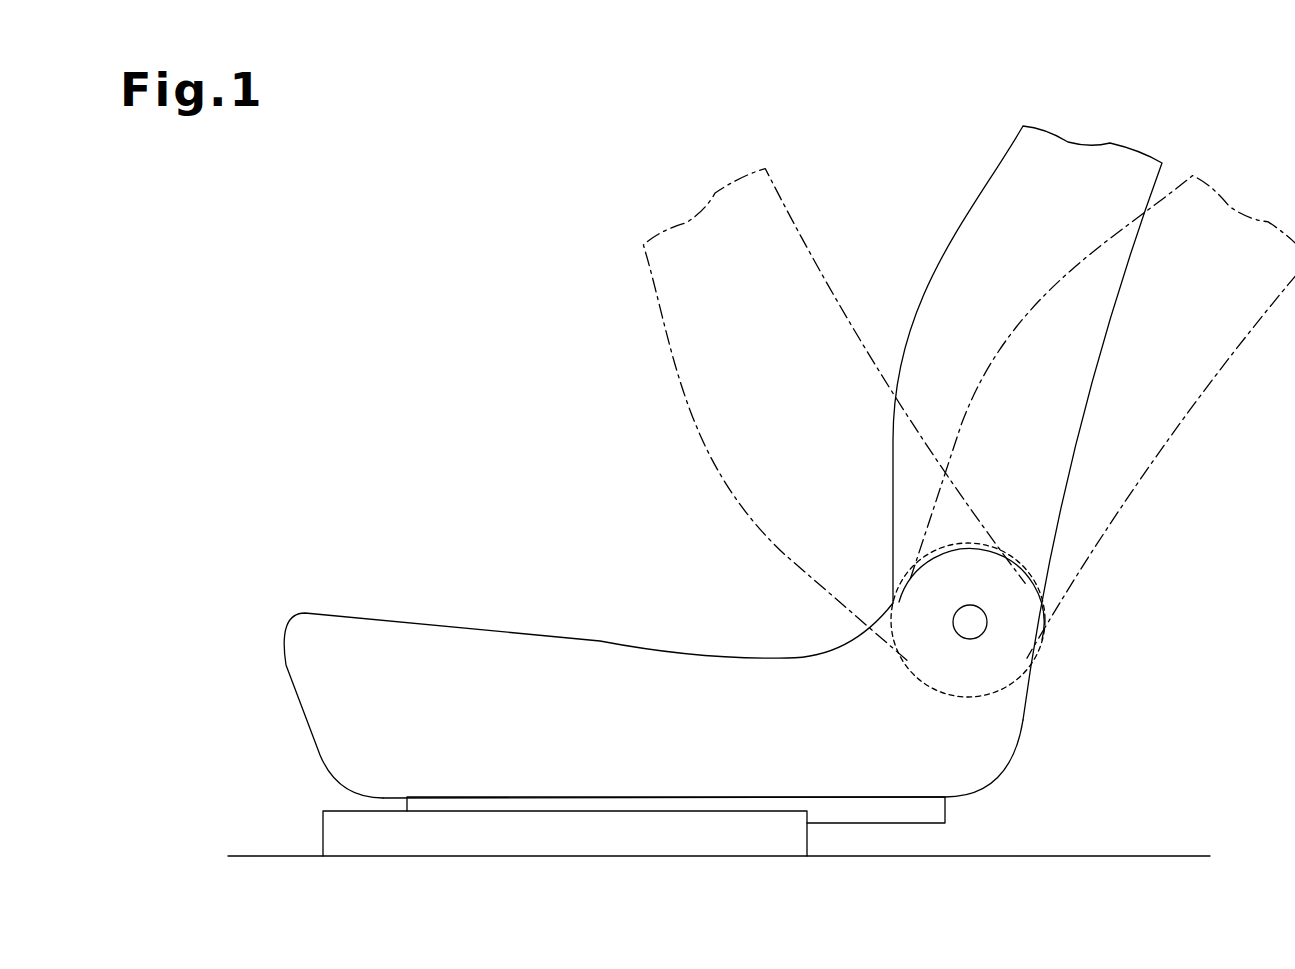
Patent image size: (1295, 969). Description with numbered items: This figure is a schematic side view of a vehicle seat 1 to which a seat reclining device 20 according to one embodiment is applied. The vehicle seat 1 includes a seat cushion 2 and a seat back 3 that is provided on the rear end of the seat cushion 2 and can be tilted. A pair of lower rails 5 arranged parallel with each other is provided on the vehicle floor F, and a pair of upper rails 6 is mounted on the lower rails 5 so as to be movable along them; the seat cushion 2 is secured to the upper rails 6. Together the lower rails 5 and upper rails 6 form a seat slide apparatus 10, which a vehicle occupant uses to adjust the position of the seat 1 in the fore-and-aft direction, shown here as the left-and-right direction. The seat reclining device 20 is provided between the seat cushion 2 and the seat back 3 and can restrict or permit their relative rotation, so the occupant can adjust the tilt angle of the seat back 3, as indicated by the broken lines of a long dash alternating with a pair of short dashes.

The vehicle seat 1 is at (236, 190).
The seat cushion 2 is at (553, 637).
The seat back 3 is at (973, 205).
The lower rails 5 is at (323, 835).
The upper rails 6 is at (947, 808).
The seat slide apparatus 10 is at (233, 724).
The seat reclining device 20 is at (1037, 582).
The vehicle floor F is at (1103, 855).